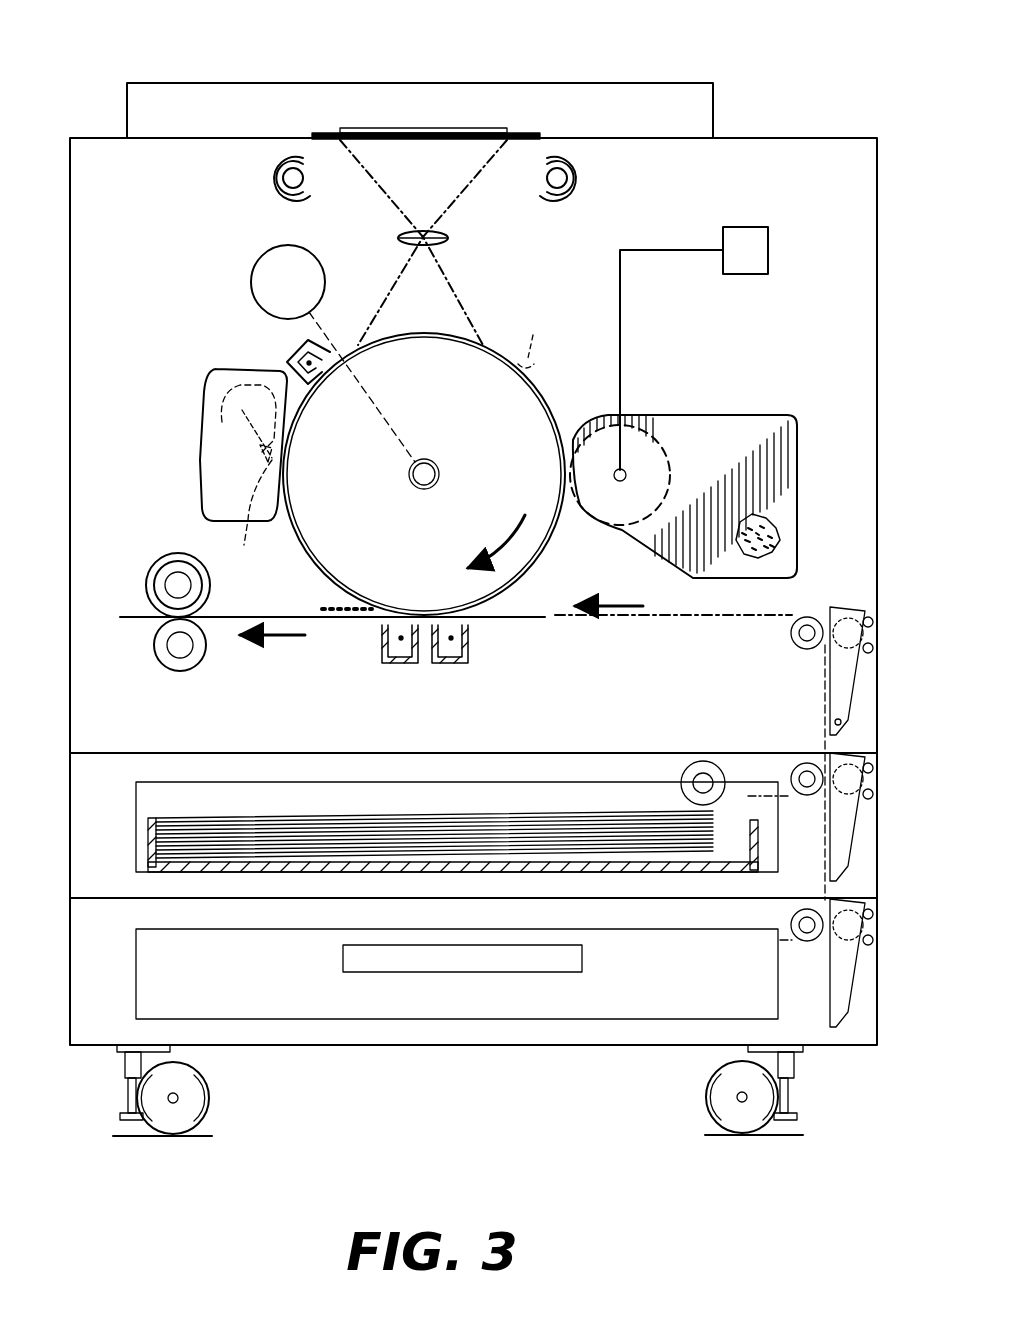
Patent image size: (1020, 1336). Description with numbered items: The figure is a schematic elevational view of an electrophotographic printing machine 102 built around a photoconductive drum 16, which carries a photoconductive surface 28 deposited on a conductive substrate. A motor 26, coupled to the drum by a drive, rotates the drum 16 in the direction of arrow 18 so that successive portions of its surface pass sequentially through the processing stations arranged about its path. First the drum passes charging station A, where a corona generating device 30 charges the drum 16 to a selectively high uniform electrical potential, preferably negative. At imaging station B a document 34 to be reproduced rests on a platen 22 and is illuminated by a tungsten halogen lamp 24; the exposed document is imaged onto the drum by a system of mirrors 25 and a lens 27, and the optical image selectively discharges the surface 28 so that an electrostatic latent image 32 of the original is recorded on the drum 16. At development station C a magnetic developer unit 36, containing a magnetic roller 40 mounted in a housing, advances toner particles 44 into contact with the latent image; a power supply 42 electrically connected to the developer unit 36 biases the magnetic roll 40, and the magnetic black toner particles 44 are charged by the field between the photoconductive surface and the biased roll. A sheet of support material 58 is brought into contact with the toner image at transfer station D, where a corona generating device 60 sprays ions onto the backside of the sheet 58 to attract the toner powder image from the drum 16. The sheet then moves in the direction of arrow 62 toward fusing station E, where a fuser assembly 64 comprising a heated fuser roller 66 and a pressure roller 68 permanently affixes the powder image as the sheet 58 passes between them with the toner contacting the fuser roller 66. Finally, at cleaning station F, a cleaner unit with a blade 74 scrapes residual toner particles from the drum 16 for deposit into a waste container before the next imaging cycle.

The printing machine 102 is at (803, 55).
The photoconductive drum 16 is at (462, 342).
The arrow 18 is at (503, 543).
The platen 22 is at (312, 134).
The tungsten halogen lamp 24 is at (303, 177).
The mirrors 25 is at (280, 198).
The motor 26 is at (310, 248).
The lens 27 is at (404, 246).
The photoconductive surface 28 is at (548, 400).
The corona generating device 30 is at (292, 350).
The electrostatic latent image 32 is at (534, 337).
The document 34 is at (500, 128).
The developer unit 36 is at (698, 403).
The magnetic roller 40 is at (651, 436).
The power supply 42 is at (770, 247).
The toner particles 44 is at (780, 528).
The sheet of support material 58 is at (345, 606).
The corona generating device 60 is at (466, 645).
The arrow 62 is at (284, 637).
The fuser assembly 64 is at (178, 538).
The heated fuser roller 66 is at (160, 566).
The pressure roller 68 is at (182, 657).
The blade 74 is at (250, 489).
The charging station A is at (284, 356).
The imaging station B is at (592, 158).
The development station C is at (574, 416).
The transfer station D is at (372, 660).
The fusing station E is at (148, 668).
The cleaning station F is at (182, 430).